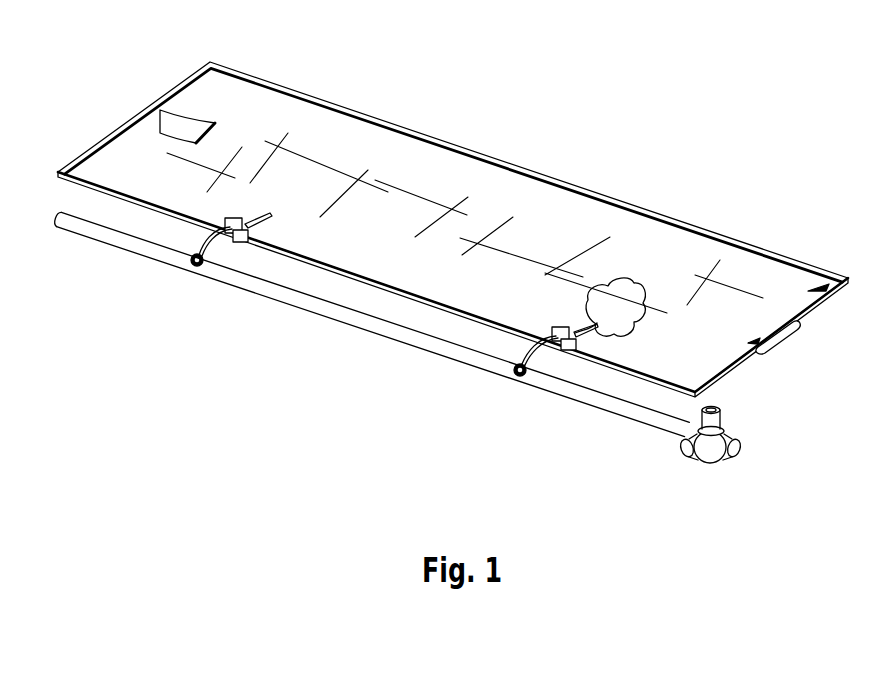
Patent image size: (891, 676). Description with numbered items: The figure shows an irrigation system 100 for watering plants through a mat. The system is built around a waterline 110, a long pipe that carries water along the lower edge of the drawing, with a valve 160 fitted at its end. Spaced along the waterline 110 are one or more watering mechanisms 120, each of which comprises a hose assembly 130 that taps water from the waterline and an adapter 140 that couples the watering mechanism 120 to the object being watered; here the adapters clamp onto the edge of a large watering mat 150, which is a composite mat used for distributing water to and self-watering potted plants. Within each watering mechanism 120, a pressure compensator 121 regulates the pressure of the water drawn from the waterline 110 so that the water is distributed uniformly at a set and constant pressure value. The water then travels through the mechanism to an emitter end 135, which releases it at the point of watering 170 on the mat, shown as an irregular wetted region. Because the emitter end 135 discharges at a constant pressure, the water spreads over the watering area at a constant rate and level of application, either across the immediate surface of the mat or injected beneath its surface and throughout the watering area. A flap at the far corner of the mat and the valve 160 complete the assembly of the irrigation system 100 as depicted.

The irrigation system 100 is at (467, 276).
The waterline 110 is at (618, 412).
The watering mechanism 120 is at (590, 338).
The pressure compensator 121 is at (523, 378).
The hose assembly 130 is at (514, 380).
The emitter end 135 is at (568, 326).
The adapter 140 is at (558, 326).
The watering mat 150 is at (836, 293).
The valve 160 is at (710, 462).
The point of watering 170 is at (632, 283).